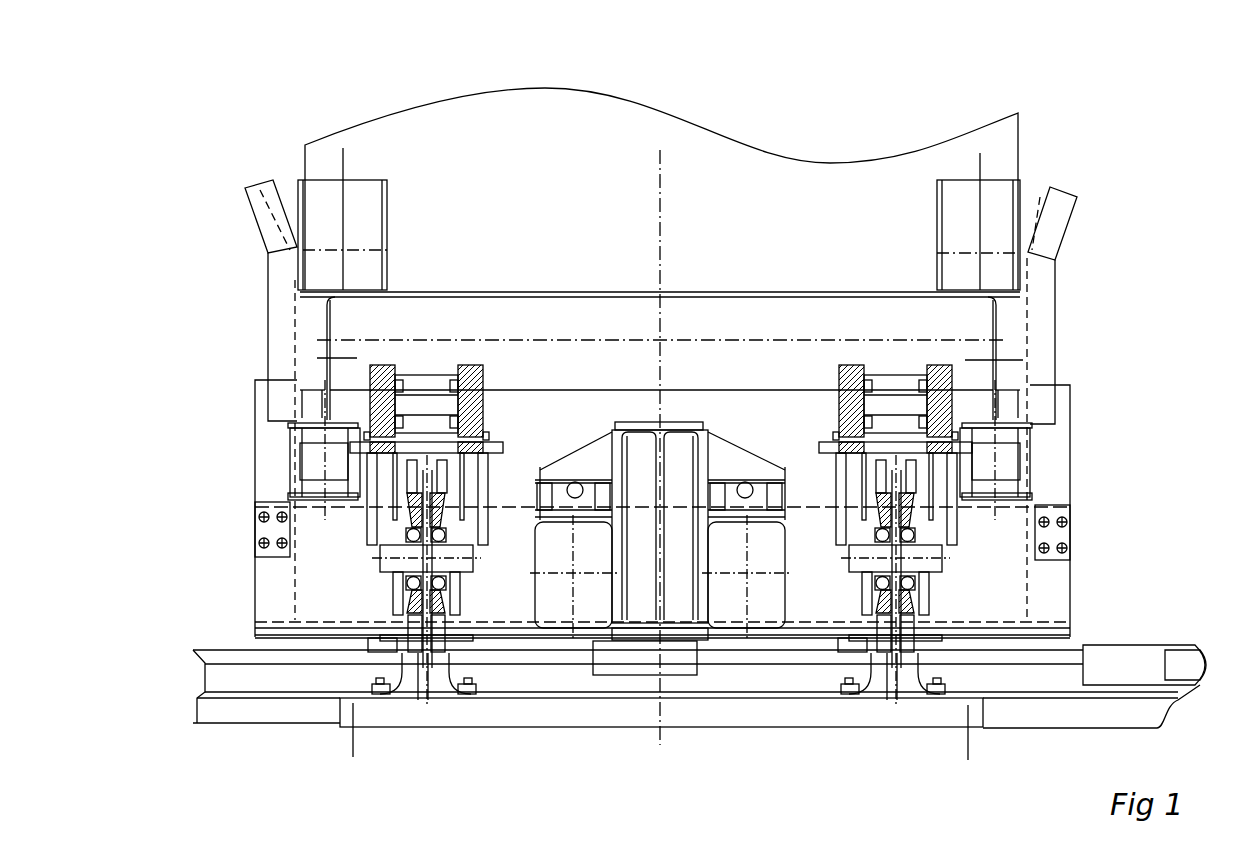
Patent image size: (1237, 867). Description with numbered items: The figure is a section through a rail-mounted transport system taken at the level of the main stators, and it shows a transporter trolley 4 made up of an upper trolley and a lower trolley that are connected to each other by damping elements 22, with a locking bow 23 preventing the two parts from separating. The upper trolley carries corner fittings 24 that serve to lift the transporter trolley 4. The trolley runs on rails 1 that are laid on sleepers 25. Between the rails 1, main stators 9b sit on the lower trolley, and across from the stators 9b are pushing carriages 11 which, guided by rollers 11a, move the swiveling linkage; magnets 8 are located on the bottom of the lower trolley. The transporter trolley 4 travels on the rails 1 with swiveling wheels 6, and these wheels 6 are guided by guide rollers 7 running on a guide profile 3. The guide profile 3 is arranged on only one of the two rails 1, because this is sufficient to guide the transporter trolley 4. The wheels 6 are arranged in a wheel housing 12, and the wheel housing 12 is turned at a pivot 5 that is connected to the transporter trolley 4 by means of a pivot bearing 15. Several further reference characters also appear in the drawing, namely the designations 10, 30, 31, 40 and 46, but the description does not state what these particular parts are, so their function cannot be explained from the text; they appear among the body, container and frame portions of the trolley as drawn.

The rails 1 is at (420, 688).
The guide profile 3 is at (427, 653).
The transporter trolley 4 is at (248, 333).
The pivot 5 is at (885, 385).
The swiveling wheels 6 is at (868, 642).
The guide rollers 7 is at (383, 643).
The magnets 8 is at (1072, 633).
The main stators 9b is at (637, 660).
The clamp bolt 10 is at (570, 490).
The pushing carriages 11 is at (597, 598).
The rollers 11a is at (792, 477).
The wheel housing 12 is at (387, 588).
The pivot bearing 15 is at (866, 375).
The damping elements 22 is at (1015, 480).
The locking bow 23 is at (268, 452).
The corner fittings 24 is at (1017, 320).
The sleepers 25 is at (948, 713).
The container 30 is at (745, 180).
The tab 31 is at (1057, 200).
The top beam 40 is at (575, 310).
The lower body plate 46 is at (1043, 593).